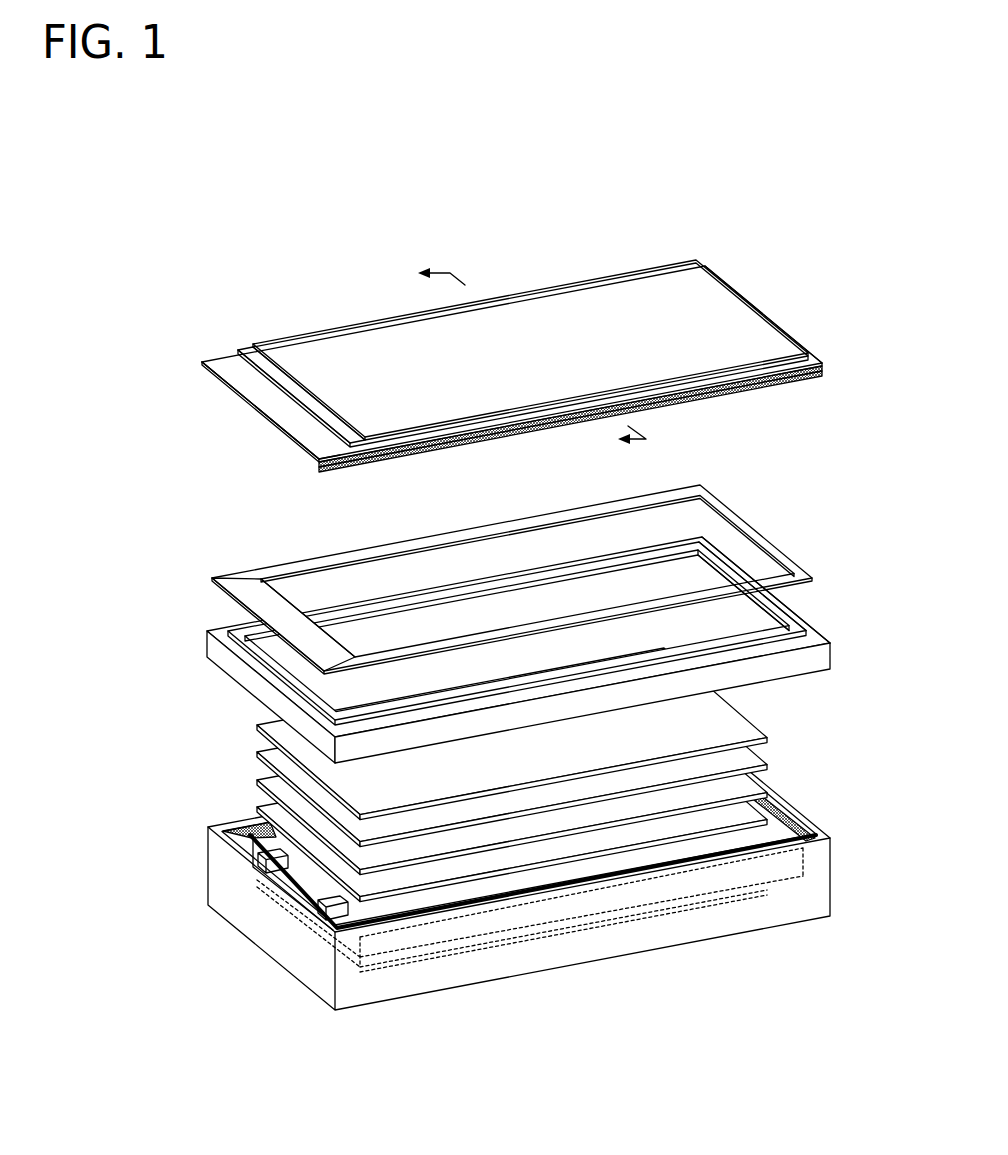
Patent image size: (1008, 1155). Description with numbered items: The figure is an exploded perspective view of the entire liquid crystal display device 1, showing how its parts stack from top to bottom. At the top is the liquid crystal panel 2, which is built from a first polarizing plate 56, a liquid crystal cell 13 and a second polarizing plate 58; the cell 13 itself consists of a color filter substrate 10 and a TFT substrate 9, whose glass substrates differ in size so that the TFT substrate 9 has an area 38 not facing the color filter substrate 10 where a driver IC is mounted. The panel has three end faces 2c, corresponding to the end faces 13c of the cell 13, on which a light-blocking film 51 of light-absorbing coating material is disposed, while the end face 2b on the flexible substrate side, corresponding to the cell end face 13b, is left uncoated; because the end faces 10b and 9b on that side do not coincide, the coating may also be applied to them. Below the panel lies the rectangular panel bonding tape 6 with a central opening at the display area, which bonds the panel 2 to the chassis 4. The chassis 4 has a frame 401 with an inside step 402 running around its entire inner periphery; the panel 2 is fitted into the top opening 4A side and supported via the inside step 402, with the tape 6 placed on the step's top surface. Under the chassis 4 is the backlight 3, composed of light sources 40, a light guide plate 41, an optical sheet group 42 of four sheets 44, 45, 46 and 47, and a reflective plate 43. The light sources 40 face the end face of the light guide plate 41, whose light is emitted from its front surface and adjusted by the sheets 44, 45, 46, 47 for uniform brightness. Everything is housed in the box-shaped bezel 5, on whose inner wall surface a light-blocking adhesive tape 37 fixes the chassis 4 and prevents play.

The display device 1 is at (499, 609).
The liquid crystal panel 2 is at (494, 358).
The end face 2b is at (292, 448).
The end faces 2c is at (790, 346).
The end faces 13c is at (716, 278).
The backlight 3 is at (511, 854).
The chassis 4 is at (218, 634).
The top opening 4A is at (726, 565).
The frame 401 is at (824, 634).
The inside step 402 is at (781, 621).
The bezel 5 is at (832, 872).
The panel bonding tape 6 is at (237, 576).
The TFT substrate 9 is at (223, 359).
The end face 9b is at (263, 422).
The color filter substrate 10 is at (238, 348).
The end face 10b is at (285, 392).
The liquid crystal cell 13 is at (467, 362).
The end face 13b is at (239, 406).
The light-blocking adhesive tape 37 is at (806, 828).
The area 38 is at (317, 447).
The light sources 40 is at (262, 862).
The light guide plate 41 is at (395, 907).
The optical sheet group 42 is at (486, 775).
The reflective plate 43 is at (722, 899).
The reflective sheet 44 is at (256, 726).
The reflective sheet 45 is at (256, 753).
The reflective sheet 46 is at (256, 781).
The reflective sheet 47 is at (256, 808).
The light-blocking film 51 is at (751, 388).
The first polarizing plate 56 is at (343, 336).
The second polarizing plate 58 is at (385, 462).